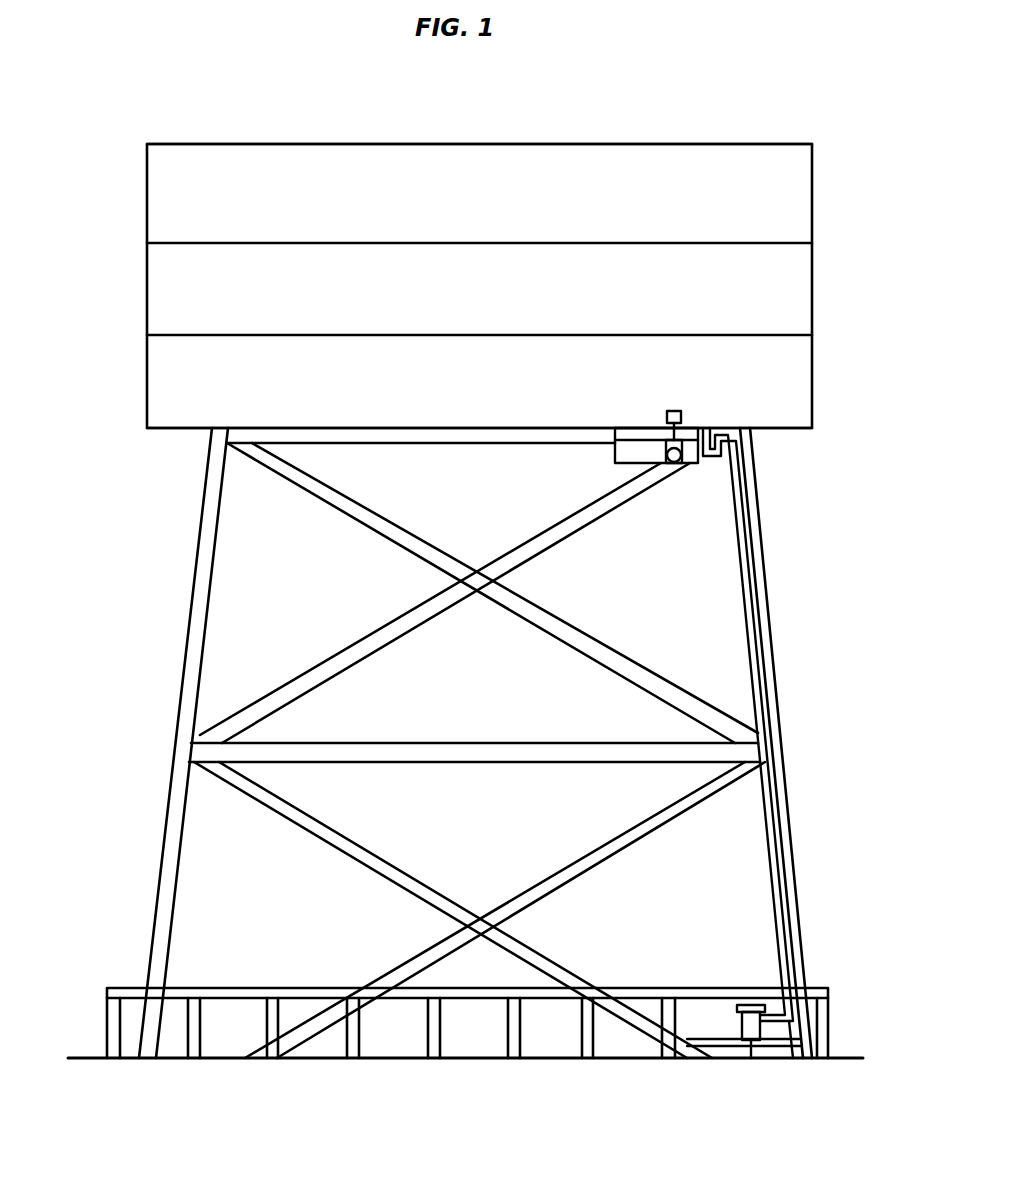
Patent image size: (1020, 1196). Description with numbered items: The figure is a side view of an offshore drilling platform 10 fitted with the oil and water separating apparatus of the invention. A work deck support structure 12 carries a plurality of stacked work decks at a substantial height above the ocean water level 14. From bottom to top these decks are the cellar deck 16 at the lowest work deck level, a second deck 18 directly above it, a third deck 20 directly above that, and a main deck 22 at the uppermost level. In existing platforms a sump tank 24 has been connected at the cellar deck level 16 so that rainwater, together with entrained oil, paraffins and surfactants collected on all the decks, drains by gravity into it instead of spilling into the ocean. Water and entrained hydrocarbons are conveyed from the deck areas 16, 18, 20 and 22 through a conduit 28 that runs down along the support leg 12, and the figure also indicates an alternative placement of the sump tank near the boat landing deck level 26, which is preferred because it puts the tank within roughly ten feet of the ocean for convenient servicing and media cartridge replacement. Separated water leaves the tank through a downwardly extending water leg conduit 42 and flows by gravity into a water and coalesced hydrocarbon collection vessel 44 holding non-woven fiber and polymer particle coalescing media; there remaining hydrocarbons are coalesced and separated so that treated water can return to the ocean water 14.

The offshore drilling platform 10 is at (826, 356).
The work deck support structure 12 is at (770, 627).
The ocean water level 14 is at (78, 1052).
The cellar deck 16 is at (171, 428).
The second deck 18 is at (171, 335).
The third deck 20 is at (171, 242).
The main deck 22 is at (195, 144).
The sump tank 24 is at (700, 461).
The boat landing deck level 26 is at (652, 987).
The conduit 28 is at (744, 561).
The water leg conduit 42 is at (772, 700).
The water and coalesced hydrocarbon collection vessel 44 is at (830, 1028).